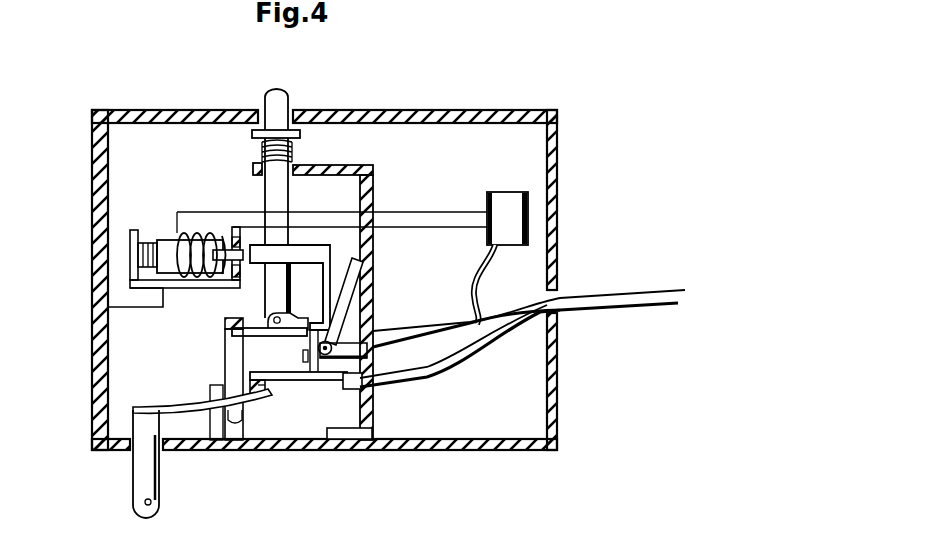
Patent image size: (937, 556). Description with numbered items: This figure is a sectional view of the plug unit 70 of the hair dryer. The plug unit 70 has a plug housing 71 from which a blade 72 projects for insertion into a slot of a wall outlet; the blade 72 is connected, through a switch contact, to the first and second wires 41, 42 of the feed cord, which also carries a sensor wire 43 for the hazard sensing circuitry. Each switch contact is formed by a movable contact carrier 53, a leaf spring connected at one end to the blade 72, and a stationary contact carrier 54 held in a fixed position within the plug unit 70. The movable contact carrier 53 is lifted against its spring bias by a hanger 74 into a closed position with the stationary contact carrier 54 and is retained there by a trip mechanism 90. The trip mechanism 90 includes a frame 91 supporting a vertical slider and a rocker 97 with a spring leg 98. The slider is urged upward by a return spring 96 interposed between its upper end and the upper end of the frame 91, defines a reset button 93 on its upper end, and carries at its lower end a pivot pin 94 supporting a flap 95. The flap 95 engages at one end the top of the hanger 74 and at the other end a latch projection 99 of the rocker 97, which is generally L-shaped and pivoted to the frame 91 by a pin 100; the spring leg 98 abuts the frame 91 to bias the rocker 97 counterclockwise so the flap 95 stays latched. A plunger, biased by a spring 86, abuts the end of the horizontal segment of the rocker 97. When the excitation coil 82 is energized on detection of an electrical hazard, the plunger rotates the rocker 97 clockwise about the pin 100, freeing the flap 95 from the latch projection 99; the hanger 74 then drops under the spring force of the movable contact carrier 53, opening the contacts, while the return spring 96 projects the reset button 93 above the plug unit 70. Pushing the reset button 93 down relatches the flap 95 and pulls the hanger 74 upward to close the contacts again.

The plug unit 70 is at (558, 112).
The plug housing 71 is at (553, 252).
The blade 72 is at (141, 464).
The hanger 74 is at (227, 342).
The excitation coil 82 is at (198, 232).
The spring 86 is at (147, 265).
The trip mechanism 90 is at (377, 178).
The frame 91 is at (353, 167).
The reset button 93 is at (282, 96).
The pivot pin 94 is at (310, 318).
The flap 95 is at (291, 338).
The return spring 96 is at (293, 143).
The rocker 97 is at (262, 252).
The spring leg 98 is at (312, 324).
The latch projection 99 is at (495, 243).
The pin 100 is at (326, 355).
The first wire 41 is at (418, 334).
The second wire 42 is at (445, 362).
The sensor wire 43 is at (480, 295).
The movable contact carrier 53 is at (193, 414).
The stationary contact carrier 54 is at (282, 380).